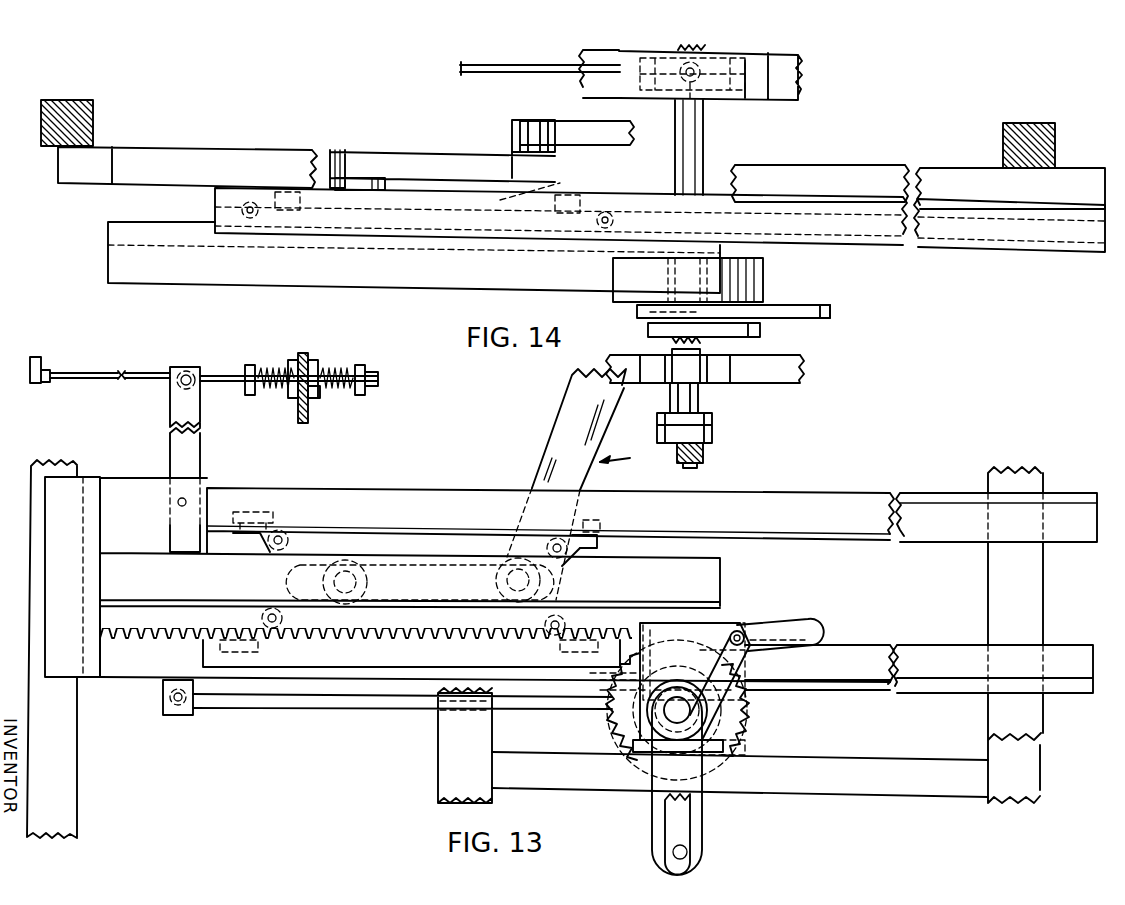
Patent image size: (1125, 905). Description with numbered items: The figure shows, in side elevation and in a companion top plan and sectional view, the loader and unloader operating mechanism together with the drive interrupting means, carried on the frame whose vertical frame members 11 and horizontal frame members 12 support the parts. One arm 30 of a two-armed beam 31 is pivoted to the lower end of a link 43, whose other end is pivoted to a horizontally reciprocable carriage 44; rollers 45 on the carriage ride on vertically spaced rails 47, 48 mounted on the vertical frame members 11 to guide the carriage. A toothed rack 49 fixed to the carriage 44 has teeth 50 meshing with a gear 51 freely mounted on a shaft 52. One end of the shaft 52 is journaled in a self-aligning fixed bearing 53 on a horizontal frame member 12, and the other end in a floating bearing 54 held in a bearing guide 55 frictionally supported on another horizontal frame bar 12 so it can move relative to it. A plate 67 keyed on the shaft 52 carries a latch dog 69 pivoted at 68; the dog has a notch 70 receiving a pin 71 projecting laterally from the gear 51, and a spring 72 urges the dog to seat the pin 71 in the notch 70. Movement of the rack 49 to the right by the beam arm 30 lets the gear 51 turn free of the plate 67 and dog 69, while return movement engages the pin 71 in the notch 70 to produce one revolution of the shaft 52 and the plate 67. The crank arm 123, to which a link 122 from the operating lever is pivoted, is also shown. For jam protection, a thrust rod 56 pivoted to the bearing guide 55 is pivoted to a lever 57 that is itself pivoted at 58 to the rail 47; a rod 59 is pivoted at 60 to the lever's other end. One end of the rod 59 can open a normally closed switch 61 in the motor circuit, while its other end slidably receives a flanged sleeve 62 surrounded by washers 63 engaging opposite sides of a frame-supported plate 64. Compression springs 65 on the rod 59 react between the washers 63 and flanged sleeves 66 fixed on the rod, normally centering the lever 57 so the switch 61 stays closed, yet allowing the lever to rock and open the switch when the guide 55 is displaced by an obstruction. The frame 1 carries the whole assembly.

In FIG. 13, the side frame member 1 is at (31, 535).
In FIG. 13, the vertical frame member 11 is at (1048, 620).
In FIG. 14, the horizontal frame member 12 is at (800, 62).
In FIG. 13, the horizontal frame member 12 is at (844, 750).
In FIG. 14, the beam arm 30 is at (583, 120).
In FIG. 13, the beam arm 30 is at (532, 472).
In FIG. 13, the two-armed beam 31 is at (630, 462).
In FIG. 14, the link 43 is at (437, 151).
In FIG. 13, the link 43 is at (323, 568).
In FIG. 14, the carriage 44 is at (538, 200).
In FIG. 13, the carriage 44 is at (582, 549).
In FIG. 13, the rollers 45 is at (267, 520).
In FIG. 14, the rail 47 is at (212, 196).
In FIG. 13, the rail 47 is at (928, 534).
In FIG. 13, the rail 48 is at (918, 638).
In FIG. 14, the toothed rack 49 is at (108, 258).
In FIG. 13, the toothed rack 49 is at (711, 585).
In FIG. 13, the teeth 50 is at (438, 641).
In FIG. 14, the gear 51 is at (766, 271).
In FIG. 13, the gear 51 is at (749, 706).
In FIG. 14, the shaft 52 is at (703, 146).
In FIG. 13, the shaft 52 is at (620, 712).
In FIG. 14, the self-aligning fixed bearing 53 is at (656, 356).
In FIG. 13, the self-aligning fixed bearing 53 is at (614, 737).
In FIG. 14, the floating bearing 54 is at (708, 88).
In FIG. 14, the bearing guide 55 is at (753, 100).
In FIG. 13, the bearing guide 55 is at (735, 740).
In FIG. 14, the thrust rod 56 is at (519, 65).
In FIG. 13, the thrust rod 56 is at (532, 708).
In FIG. 13, the lever 57 is at (162, 690).
In FIG. 13, the pivot 58 is at (178, 496).
In FIG. 13, the rod 59 is at (142, 381).
In FIG. 13, the pivot 60 is at (186, 370).
In FIG. 13, the switch 61 is at (38, 385).
In FIG. 13, the flanged sleeve 62 is at (318, 396).
In FIG. 13, the washers 63 is at (290, 364).
In FIG. 13, the plate 64 is at (306, 424).
In FIG. 13, the compression springs 65 is at (274, 396).
In FIG. 13, the flanged sleeves 66 is at (248, 366).
In FIG. 14, the plate 67 is at (746, 337).
In FIG. 13, the plate 67 is at (746, 690).
In FIG. 14, the pivot 68 is at (762, 320).
In FIG. 13, the pivot 68 is at (737, 630).
In FIG. 14, the latch dog 69 is at (808, 318).
In FIG. 13, the latch dog 69 is at (791, 624).
In FIG. 13, the notch 70 is at (744, 669).
In FIG. 14, the pin 71 is at (637, 311).
In FIG. 13, the pin 71 is at (686, 669).
In FIG. 13, the spring 72 is at (608, 687).
In FIG. 14, the link 122 is at (704, 460).
In FIG. 13, the link 122 is at (658, 819).
In FIG. 14, the crank arm 123 is at (712, 432).
In FIG. 13, the crank arm 123 is at (702, 801).